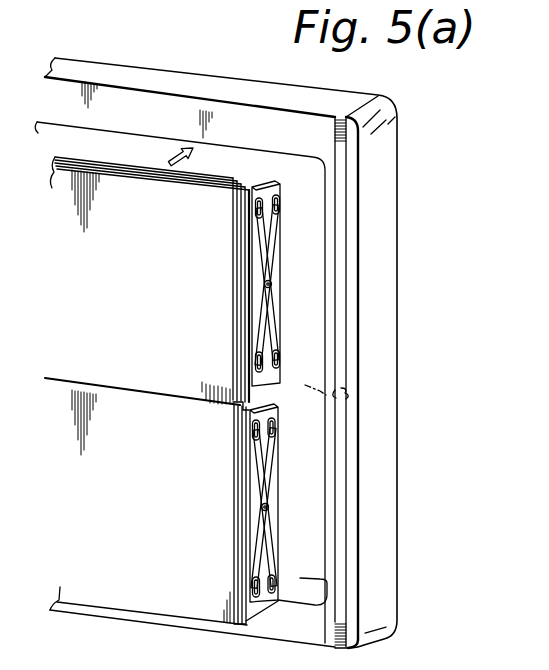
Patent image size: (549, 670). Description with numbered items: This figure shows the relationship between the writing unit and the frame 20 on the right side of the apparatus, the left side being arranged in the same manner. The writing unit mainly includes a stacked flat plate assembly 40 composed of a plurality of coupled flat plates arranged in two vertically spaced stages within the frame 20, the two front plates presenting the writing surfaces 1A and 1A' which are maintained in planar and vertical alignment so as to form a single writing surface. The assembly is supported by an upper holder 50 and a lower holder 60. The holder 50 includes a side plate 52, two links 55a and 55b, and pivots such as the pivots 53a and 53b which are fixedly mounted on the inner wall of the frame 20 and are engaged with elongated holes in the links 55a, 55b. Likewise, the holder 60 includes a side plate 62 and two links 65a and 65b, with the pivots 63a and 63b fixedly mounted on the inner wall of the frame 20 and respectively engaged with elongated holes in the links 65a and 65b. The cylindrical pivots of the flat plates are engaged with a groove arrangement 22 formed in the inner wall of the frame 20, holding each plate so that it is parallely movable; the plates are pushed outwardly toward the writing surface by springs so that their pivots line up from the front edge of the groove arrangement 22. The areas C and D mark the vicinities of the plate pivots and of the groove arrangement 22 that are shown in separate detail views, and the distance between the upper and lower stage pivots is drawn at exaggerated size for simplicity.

The frame 20 is at (387, 320).
The groove arrangement 22 is at (350, 392).
The writing surface 1A is at (149, 279).
The writing surface 1A' is at (146, 501).
The stacked flat plate assembly 40 is at (211, 170).
The holder 50 is at (363, 265).
The side plate 52 is at (274, 172).
The pivot 53a is at (259, 210).
The pivot 53b is at (259, 364).
The link 55a is at (263, 243).
The link 55b is at (273, 270).
The holder 60 is at (361, 510).
The side plate 62 is at (267, 603).
The pivot 63a is at (257, 430).
The pivot 63b is at (257, 587).
The link 65a is at (261, 467).
The link 65b is at (272, 563).
The area C is at (234, 410).
The area D is at (319, 385).